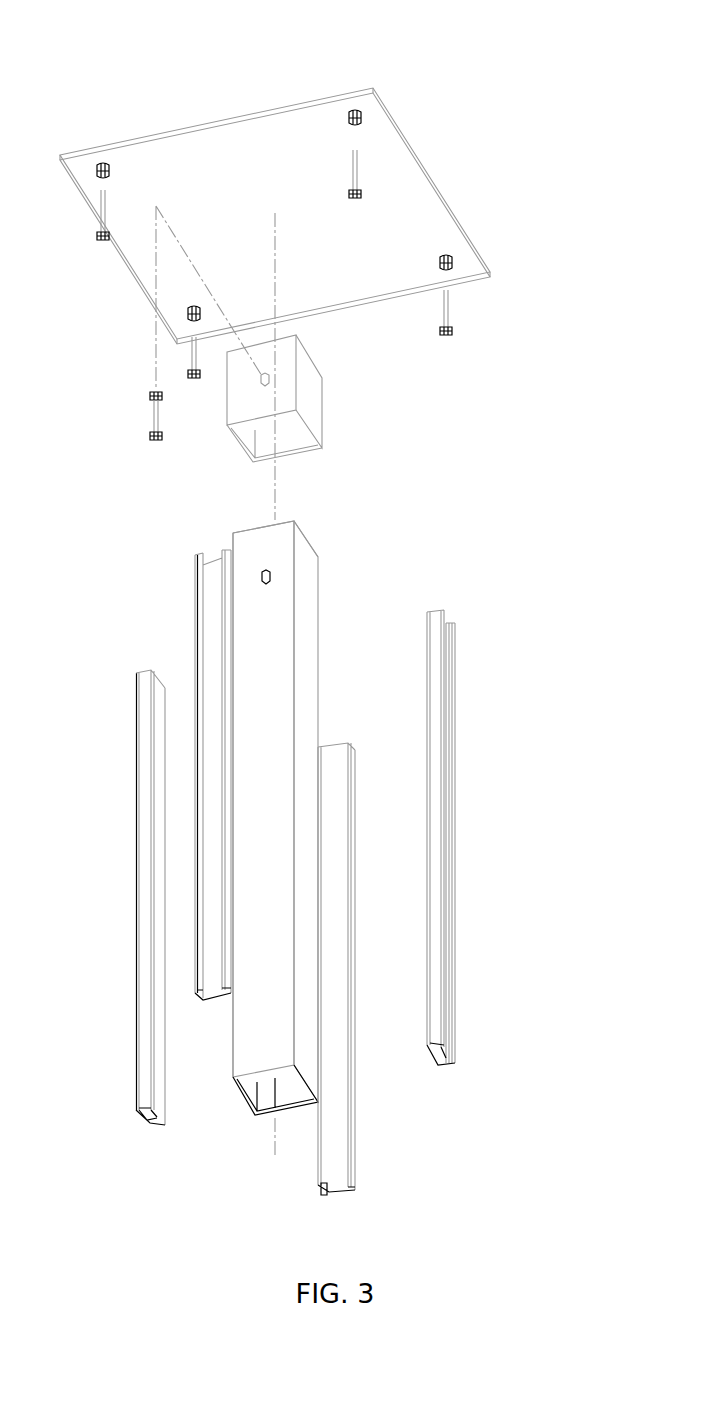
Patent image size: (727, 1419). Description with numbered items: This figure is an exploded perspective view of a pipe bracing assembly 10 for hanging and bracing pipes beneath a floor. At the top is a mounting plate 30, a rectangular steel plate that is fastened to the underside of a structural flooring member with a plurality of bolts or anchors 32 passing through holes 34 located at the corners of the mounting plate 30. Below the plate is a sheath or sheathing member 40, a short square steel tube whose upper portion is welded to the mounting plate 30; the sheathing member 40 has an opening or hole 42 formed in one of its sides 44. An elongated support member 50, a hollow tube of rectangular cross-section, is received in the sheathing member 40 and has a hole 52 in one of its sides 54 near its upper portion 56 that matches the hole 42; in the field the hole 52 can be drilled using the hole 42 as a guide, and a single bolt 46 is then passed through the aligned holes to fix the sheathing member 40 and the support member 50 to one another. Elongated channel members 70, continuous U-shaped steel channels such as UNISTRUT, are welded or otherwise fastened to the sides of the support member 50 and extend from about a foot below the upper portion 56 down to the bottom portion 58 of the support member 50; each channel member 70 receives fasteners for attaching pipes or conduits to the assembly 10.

The assembly 10 is at (276, 47).
The mounting plate 30 is at (528, 166).
The bolts or anchors 32 is at (471, 321).
The holes 34 is at (355, 122).
The sheath or sheathing member 40 is at (296, 394).
The opening or hole 42 is at (282, 379).
The side 44 is at (358, 415).
The bolt 46 is at (104, 415).
The elongated support member 50 is at (336, 625).
The hole 52 is at (270, 603).
The side 54 is at (277, 741).
The upper portion 56 is at (336, 569).
The bottom portion 58 is at (239, 1154).
The elongated channel member 70 is at (508, 799).